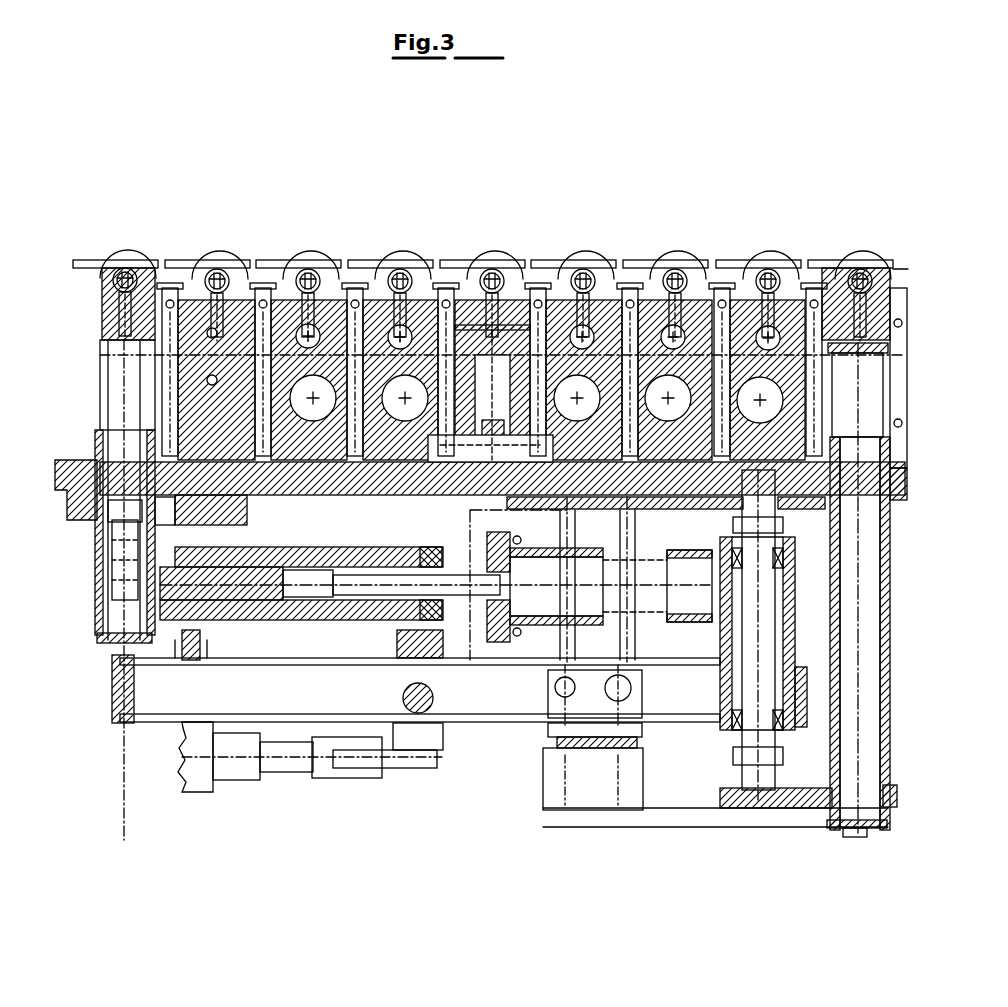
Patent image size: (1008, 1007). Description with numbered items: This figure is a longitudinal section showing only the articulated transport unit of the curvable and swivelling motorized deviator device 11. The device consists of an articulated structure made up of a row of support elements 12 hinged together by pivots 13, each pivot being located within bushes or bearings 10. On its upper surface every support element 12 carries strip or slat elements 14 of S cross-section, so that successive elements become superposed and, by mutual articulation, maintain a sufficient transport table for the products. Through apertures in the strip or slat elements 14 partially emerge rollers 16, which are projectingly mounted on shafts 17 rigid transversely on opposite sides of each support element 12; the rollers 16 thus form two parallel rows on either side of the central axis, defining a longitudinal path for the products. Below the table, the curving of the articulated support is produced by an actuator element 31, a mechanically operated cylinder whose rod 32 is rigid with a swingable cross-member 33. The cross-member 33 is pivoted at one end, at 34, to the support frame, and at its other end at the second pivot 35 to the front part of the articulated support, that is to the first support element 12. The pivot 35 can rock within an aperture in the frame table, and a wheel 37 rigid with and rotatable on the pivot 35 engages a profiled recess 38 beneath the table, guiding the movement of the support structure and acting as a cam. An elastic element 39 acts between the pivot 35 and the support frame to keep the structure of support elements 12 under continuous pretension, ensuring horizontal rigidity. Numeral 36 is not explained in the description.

The bushes or bearings 10 is at (393, 330).
The curvable and swivelling motorized deviator device 11 is at (800, 232).
The support element 12 is at (422, 350).
The pivot 13 is at (178, 360).
The strip or slat element 14 is at (128, 262).
The roller 16 is at (490, 255).
The shaft 17 is at (690, 275).
The actuator element 31 is at (197, 785).
The rod 32 is at (285, 770).
The swingable cross-member 33 is at (500, 705).
The pivot 34 is at (866, 607).
The second pivot 35 is at (100, 620).
The bracket 36 is at (88, 458).
The wheel 37 is at (120, 535).
The profiled recess 38 is at (96, 528).
The elastic element 39 is at (698, 640).